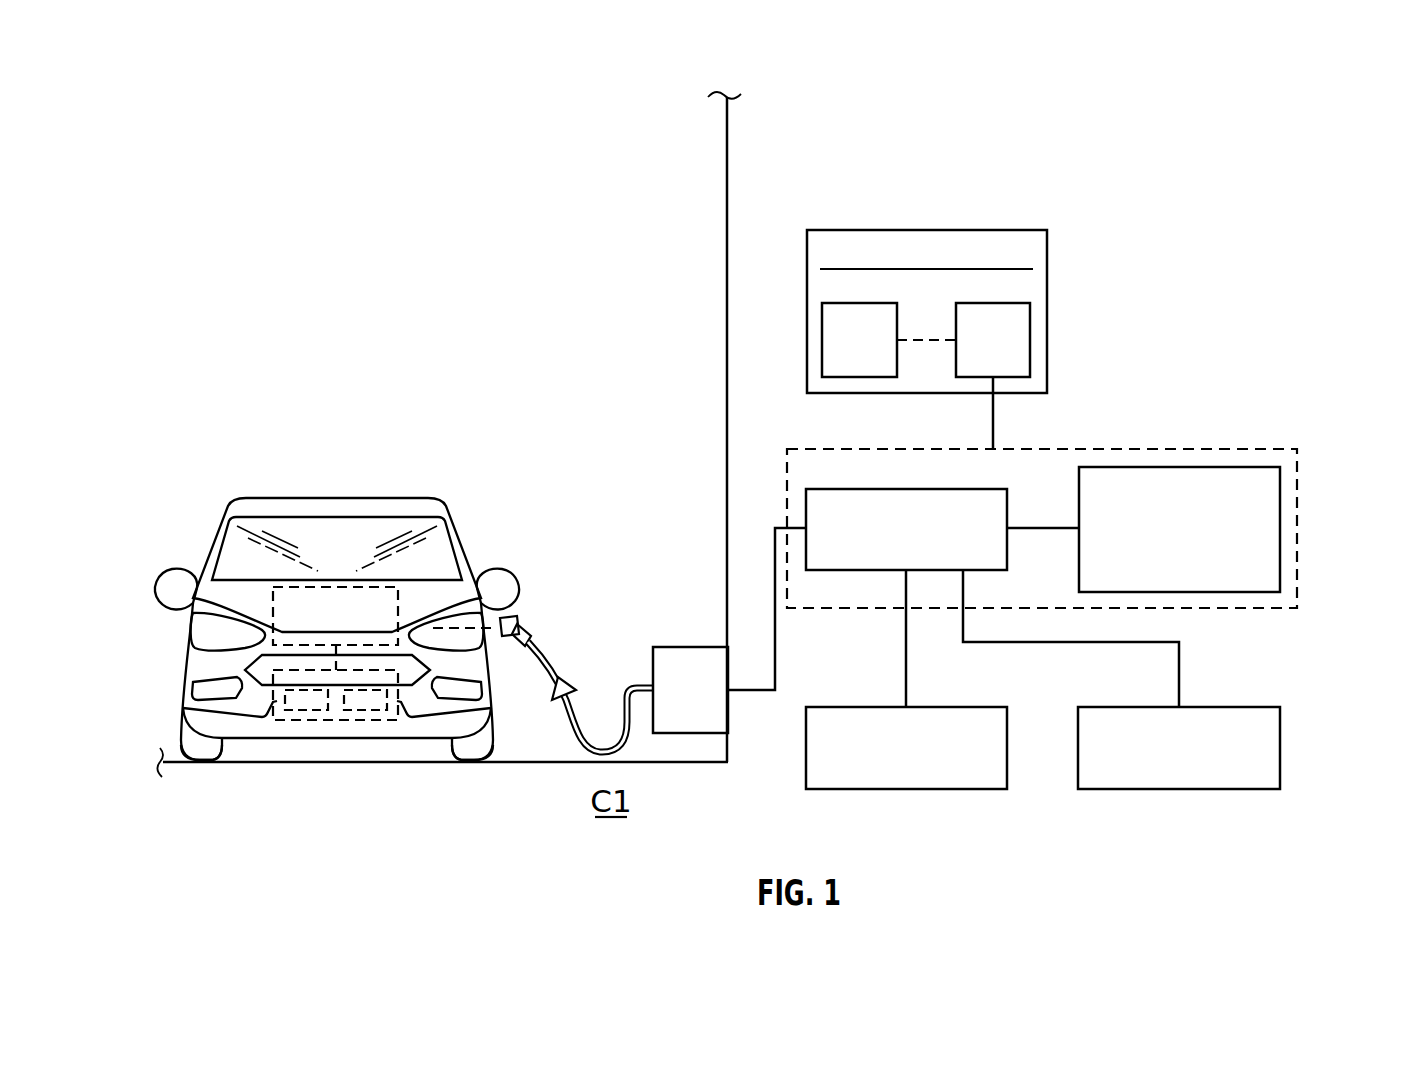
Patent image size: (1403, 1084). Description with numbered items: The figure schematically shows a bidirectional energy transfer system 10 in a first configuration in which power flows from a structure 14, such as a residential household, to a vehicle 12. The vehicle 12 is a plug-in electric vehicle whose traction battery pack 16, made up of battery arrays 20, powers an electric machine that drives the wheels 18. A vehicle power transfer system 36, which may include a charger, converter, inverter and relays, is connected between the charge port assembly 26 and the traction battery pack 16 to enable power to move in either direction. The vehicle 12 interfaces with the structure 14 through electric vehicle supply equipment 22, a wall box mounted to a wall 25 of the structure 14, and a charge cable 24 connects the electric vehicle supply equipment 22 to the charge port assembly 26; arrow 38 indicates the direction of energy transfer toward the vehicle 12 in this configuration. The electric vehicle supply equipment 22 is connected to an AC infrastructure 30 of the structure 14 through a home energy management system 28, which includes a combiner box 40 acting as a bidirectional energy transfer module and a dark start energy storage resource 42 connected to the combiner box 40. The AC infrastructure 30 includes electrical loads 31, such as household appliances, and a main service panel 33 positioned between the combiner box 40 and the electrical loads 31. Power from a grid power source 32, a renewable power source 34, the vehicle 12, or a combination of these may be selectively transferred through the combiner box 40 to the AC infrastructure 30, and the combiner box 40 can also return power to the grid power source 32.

The bidirectional energy transfer system 10 is at (277, 352).
The vehicle 12 is at (351, 463).
The structure 14 is at (725, 408).
The traction battery pack 16 is at (320, 721).
The wheels 18 is at (200, 753).
The battery arrays 20 is at (287, 714).
The electric vehicle supply equipment 22 is at (682, 647).
The charge cable 24 is at (586, 743).
The wall 25 is at (724, 470).
The charge port assembly 26 is at (511, 609).
The home energy management system 28 is at (1280, 431).
The AC infrastructure 30 is at (862, 230).
The electrical loads 31 is at (844, 355).
The grid power source 32 is at (862, 707).
The main service panel 33 is at (978, 355).
The renewable power source 34 is at (1135, 707).
The vehicle power transfer system 36 is at (328, 587).
The arrow 38 is at (569, 678).
The combiner box 40 is at (862, 489).
The dark start energy storage resource 42 is at (1160, 467).